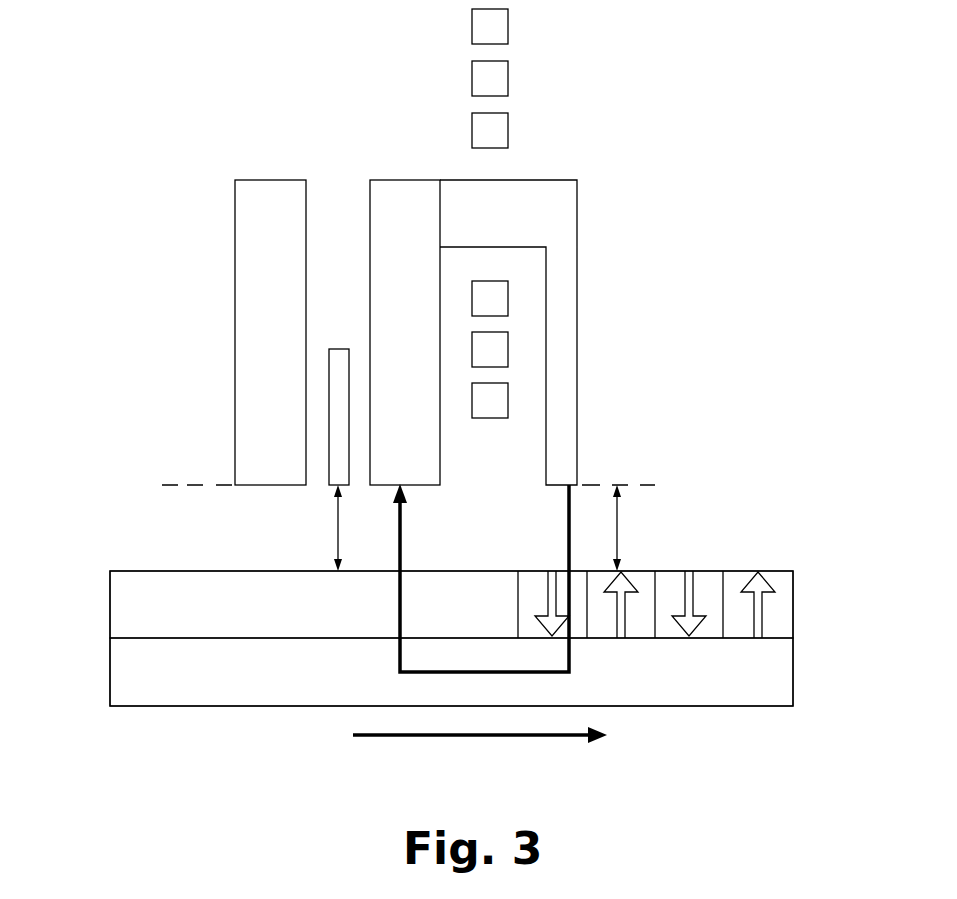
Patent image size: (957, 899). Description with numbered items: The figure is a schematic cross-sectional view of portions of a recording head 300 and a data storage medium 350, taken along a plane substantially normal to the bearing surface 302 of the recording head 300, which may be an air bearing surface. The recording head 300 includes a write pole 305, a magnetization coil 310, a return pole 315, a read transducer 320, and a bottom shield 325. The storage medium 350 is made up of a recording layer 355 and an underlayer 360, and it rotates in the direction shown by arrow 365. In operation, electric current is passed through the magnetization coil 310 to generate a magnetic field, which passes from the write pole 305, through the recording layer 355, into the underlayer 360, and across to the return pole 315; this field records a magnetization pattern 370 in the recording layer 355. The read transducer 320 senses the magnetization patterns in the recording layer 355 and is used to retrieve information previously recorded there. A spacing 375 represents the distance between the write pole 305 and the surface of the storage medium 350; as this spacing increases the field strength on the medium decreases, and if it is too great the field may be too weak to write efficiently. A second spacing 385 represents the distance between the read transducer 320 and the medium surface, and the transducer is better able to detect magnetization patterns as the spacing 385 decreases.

The recording head 300 is at (606, 150).
The bearing surface 302 is at (170, 487).
The write pole 305 is at (577, 277).
The magnetization coil 310 is at (478, 341).
The return pole 315 is at (398, 195).
The read transducer 320 is at (338, 415).
The bottom shield 325 is at (252, 237).
The data storage medium 350 is at (806, 660).
The recording layer 355 is at (113, 597).
The underlayer 360 is at (172, 688).
The arrow 365 is at (452, 737).
The magnetization pattern 370 is at (706, 571).
The spacing 375 is at (617, 520).
The spacing 385 is at (338, 519).